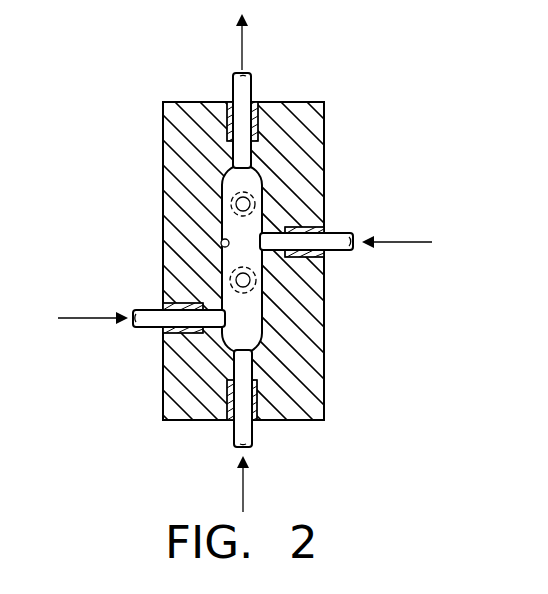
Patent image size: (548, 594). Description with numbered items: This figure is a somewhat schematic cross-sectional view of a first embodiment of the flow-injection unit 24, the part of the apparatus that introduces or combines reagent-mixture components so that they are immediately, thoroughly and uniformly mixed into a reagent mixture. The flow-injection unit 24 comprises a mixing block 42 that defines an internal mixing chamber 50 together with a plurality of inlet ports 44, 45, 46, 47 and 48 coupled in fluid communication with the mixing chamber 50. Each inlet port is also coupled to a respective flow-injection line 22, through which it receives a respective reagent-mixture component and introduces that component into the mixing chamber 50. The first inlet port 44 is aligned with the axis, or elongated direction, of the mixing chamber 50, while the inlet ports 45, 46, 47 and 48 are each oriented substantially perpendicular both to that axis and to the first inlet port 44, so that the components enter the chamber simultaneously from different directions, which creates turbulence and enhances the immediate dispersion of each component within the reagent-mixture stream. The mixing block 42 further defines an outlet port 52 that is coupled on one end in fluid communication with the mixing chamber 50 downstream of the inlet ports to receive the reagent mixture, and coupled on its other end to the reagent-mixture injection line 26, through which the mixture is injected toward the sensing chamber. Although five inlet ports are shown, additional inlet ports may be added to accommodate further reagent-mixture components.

The injection/aspiration lines 22 is at (150, 311).
The flow-injection unit 24 is at (338, 105).
The reagent-mixture injection line 26 is at (232, 96).
The mixing block 42 is at (168, 152).
The first inlet port 44 is at (236, 426).
The inlet port 45 is at (250, 287).
The inlet port 46 is at (158, 328).
The inlet port 47 is at (229, 203).
The inlet port 48 is at (318, 233).
The internal mixing chamber 50 is at (222, 240).
The outlet port 52 is at (248, 106).